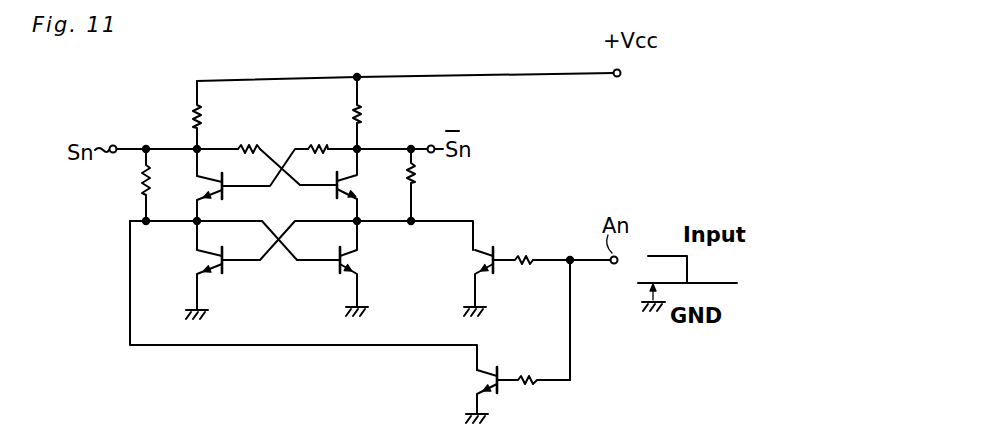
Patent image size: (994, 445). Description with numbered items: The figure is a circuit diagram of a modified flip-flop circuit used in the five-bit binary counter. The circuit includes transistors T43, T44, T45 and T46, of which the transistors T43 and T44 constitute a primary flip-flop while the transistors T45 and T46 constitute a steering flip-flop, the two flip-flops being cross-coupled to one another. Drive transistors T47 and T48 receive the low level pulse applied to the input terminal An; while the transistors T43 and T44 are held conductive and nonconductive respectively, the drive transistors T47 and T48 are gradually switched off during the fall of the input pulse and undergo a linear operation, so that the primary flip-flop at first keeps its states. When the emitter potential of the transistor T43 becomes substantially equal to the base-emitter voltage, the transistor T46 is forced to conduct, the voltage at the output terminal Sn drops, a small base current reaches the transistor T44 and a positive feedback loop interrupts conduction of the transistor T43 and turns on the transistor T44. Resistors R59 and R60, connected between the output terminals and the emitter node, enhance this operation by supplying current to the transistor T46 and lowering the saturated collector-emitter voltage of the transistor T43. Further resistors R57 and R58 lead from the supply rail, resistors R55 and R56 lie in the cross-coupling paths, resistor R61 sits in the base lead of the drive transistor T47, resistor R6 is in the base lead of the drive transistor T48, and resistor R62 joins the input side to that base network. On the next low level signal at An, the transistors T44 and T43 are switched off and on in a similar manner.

The resistor R55 is at (250, 146).
The resistor R56 is at (319, 146).
The resistor R57 is at (196, 118).
The resistor R58 is at (362, 112).
The resistor R59 is at (142, 175).
The resistor R60 is at (418, 177).
The resistor R61 is at (527, 254).
The resistor R62 is at (572, 330).
The resistor R6 is at (527, 374).
The transistor T43 is at (204, 176).
The transistor T44 is at (349, 177).
The transistor T45 is at (202, 252).
The transistor T46 is at (355, 254).
The drive transistor T47 is at (484, 250).
The drive transistor T48 is at (481, 371).